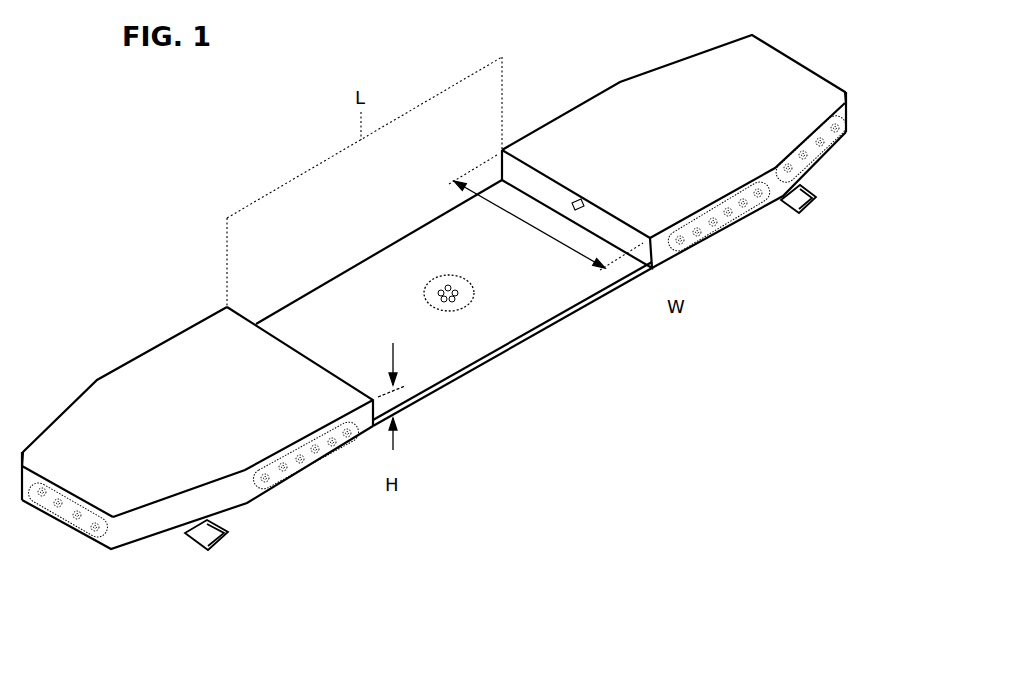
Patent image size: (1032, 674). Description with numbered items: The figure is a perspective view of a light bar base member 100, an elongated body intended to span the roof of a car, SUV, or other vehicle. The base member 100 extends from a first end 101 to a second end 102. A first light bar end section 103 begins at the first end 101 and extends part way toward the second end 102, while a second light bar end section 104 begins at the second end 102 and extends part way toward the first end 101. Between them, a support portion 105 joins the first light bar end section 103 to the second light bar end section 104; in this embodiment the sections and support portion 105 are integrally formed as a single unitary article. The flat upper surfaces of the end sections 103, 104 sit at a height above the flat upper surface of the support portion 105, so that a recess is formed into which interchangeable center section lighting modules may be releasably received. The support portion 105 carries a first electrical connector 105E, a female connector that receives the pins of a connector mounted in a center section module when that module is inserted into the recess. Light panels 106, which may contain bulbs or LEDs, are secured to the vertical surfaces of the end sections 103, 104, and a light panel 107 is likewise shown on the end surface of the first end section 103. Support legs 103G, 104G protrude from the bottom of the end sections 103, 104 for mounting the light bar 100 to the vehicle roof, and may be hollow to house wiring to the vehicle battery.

The light bar base member 100 is at (540, 410).
The first end 101 is at (120, 557).
The second end 102 is at (857, 135).
The first light bar end section 103 is at (170, 375).
The support leg 103G is at (223, 547).
The second light bar end section 104 is at (683, 92).
The support leg 104G is at (807, 213).
The support portion 105 is at (560, 290).
The first electrical connector 105E is at (428, 282).
The light panel 106 is at (230, 497).
The end light strip 107 is at (68, 510).